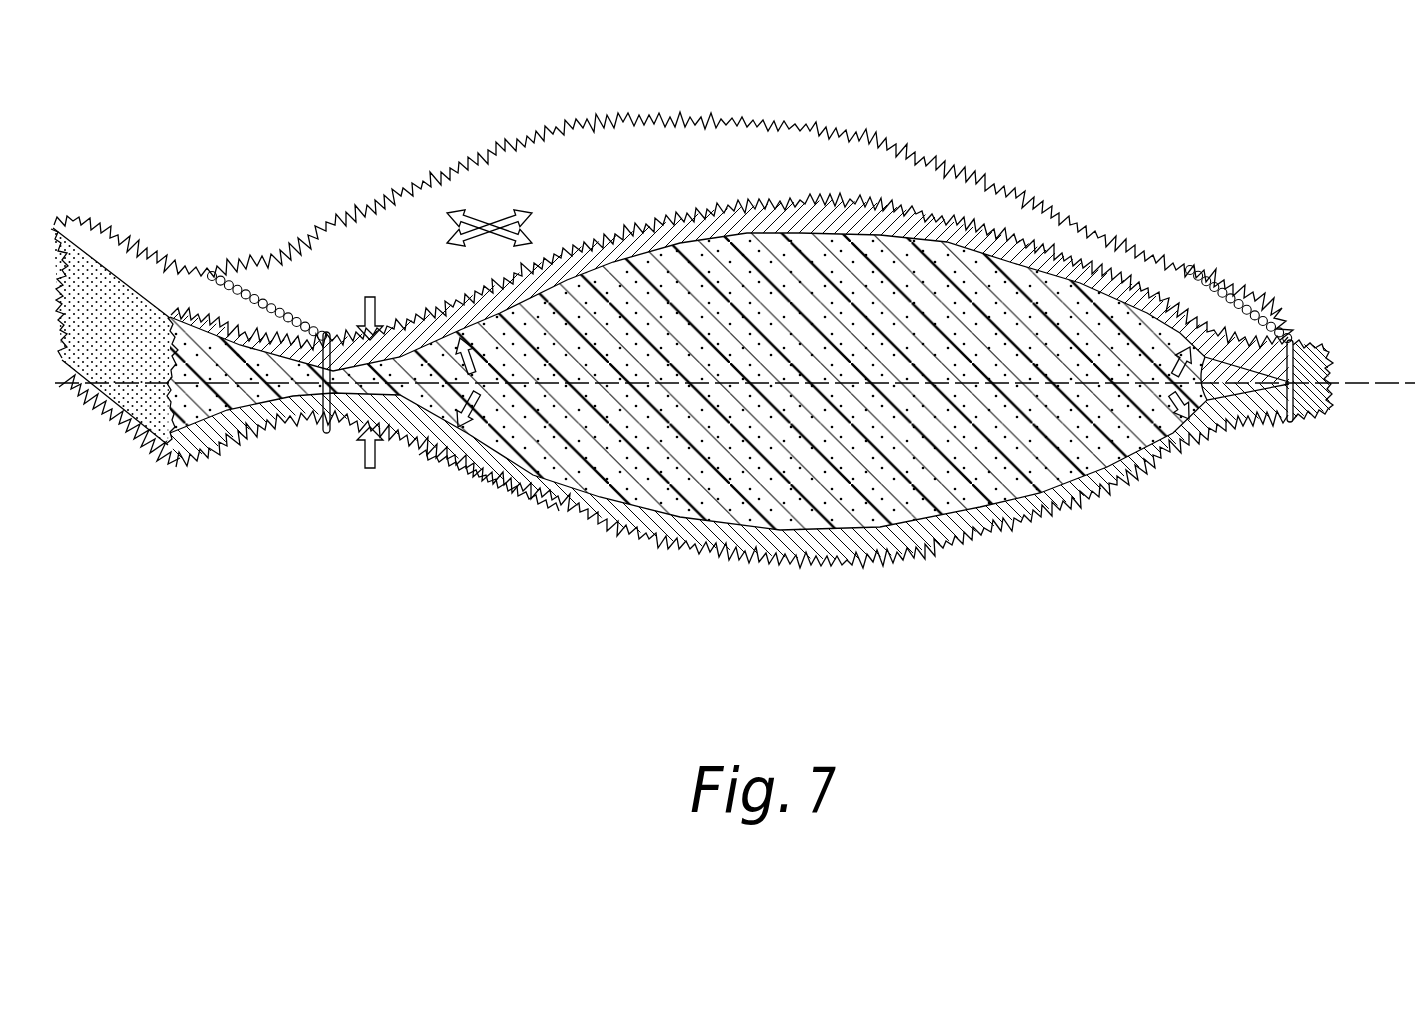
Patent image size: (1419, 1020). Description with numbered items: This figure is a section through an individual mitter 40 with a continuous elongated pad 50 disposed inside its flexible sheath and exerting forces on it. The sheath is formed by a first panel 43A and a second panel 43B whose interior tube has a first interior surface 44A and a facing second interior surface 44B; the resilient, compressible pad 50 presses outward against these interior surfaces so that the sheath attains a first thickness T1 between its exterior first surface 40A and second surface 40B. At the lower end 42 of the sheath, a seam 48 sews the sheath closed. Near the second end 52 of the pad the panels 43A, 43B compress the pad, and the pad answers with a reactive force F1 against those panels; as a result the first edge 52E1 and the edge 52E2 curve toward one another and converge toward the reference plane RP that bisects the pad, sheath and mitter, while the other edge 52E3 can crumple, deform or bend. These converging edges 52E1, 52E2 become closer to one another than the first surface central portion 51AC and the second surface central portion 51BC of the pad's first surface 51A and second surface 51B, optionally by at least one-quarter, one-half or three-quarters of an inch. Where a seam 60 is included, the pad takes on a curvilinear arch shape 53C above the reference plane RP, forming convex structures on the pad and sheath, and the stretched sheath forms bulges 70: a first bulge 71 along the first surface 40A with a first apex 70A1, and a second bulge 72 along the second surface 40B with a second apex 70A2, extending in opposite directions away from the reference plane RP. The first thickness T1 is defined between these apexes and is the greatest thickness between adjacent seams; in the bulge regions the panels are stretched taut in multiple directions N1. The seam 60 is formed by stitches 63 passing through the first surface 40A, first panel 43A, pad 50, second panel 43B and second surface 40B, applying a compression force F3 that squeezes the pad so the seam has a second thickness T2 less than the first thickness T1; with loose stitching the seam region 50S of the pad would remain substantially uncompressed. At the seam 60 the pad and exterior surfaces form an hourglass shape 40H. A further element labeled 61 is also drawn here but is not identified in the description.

The mitter 40 is at (1187, 117).
The first surface 40A is at (213, 297).
The second surface 40B is at (227, 450).
The hourglass shape 40H is at (253, 467).
The lower end 42 is at (1220, 437).
The first panel 43A is at (420, 340).
The second panel 43B is at (410, 412).
The first interior surface 44A is at (953, 245).
The second interior surface 44B is at (966, 505).
The seam 48 is at (1295, 422).
The elongated pad 50 is at (740, 480).
The seam region 50S is at (325, 445).
The first surface 51A is at (777, 237).
The first surface central portion 51AC is at (823, 237).
The second surface 51B is at (807, 528).
The second surface central portion 51BC is at (815, 528).
The second end 52 is at (1205, 365).
The first edge 52E1 is at (1180, 328).
The edge 52E2 is at (1187, 450).
The other edge 52E3 is at (1267, 417).
The arch shape 53C is at (903, 245).
The seam 60 is at (287, 295).
The compression region 61 is at (358, 470).
The stitches 63 is at (293, 313).
The bulges 70 is at (690, 105).
The first apex 70A1 is at (845, 185).
The second apex 70A2 is at (847, 560).
The first bulge 71 is at (630, 243).
The second bulge 72 is at (617, 537).
The first thickness T1 is at (835, 623).
The second thickness T2 is at (337, 493).
The reactive force F1 is at (823, 382).
The compression force F3 is at (371, 368).
The multiple directions N1 is at (489, 217).
The reference plane RP is at (1377, 382).